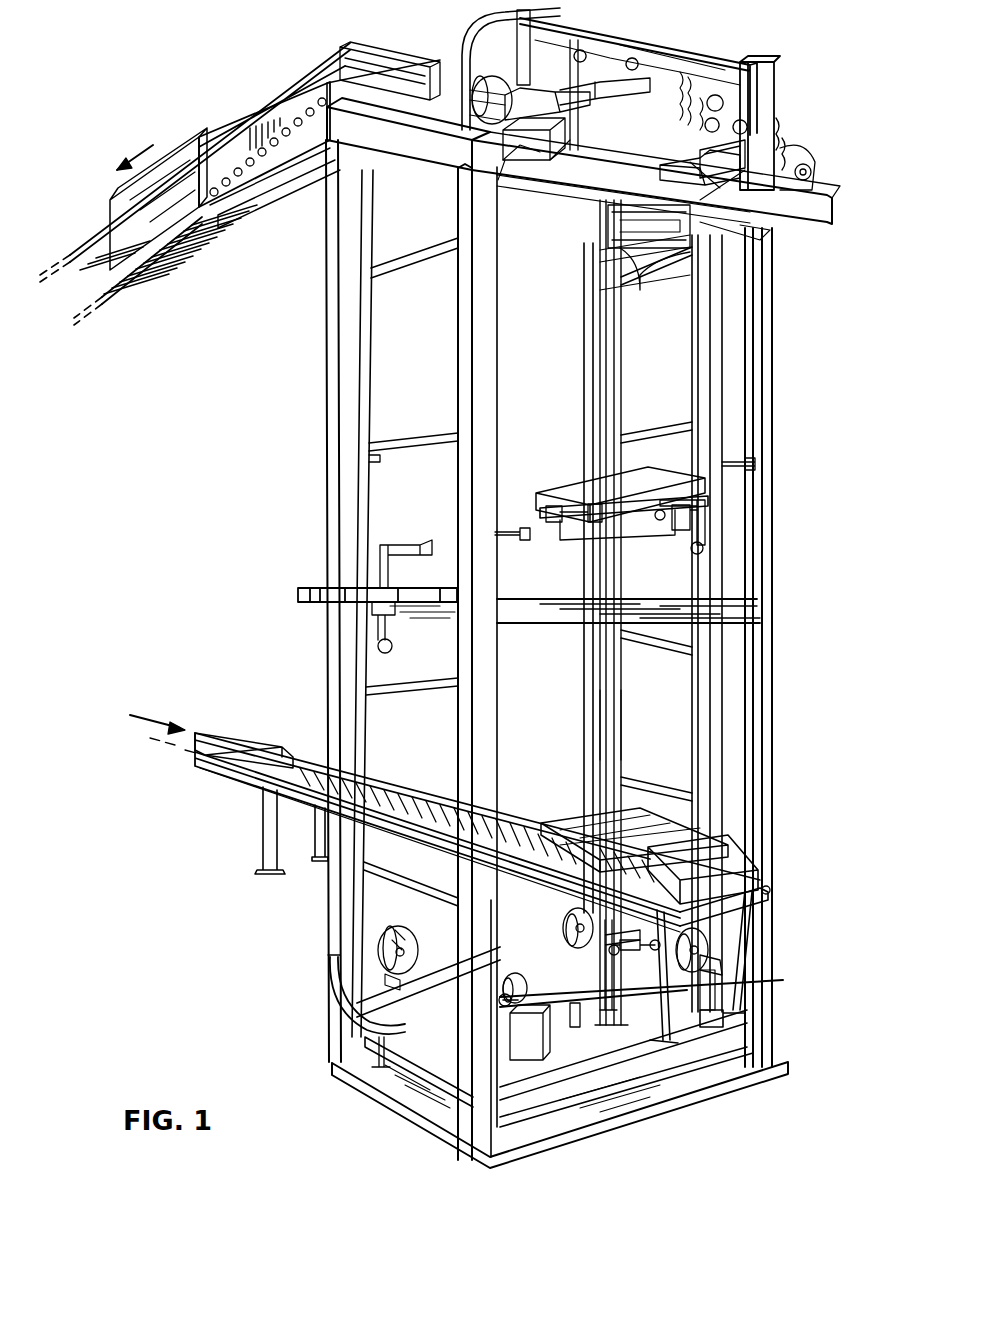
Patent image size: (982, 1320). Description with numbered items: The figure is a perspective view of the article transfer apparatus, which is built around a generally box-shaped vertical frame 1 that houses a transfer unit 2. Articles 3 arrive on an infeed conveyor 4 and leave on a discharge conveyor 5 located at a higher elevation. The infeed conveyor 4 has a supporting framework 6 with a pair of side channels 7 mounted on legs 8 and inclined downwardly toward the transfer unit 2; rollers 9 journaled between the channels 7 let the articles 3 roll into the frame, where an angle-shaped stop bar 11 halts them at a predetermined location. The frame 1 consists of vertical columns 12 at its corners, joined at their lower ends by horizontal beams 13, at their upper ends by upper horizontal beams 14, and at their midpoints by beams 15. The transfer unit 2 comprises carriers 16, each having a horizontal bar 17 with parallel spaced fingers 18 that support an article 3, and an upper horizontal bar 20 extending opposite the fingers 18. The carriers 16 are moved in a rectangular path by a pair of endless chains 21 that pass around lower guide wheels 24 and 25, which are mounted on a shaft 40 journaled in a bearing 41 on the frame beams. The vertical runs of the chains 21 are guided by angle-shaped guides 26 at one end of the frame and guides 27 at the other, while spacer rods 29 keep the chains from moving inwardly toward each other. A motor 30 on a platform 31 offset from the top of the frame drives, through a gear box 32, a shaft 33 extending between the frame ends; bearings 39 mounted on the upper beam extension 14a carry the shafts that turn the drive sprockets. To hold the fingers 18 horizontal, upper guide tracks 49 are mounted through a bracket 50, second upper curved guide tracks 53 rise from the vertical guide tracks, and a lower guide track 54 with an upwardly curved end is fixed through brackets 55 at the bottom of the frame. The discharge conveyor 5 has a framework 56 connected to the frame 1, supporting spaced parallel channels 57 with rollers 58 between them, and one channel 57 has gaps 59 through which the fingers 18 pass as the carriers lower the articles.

The vertical frame 1 is at (318, 425).
The transfer unit 2 is at (735, 688).
The articles 3 is at (182, 145).
The infeed conveyor 4 is at (410, 782).
The discharge conveyor 5 is at (265, 100).
The supporting framework 6 is at (262, 788).
The side channels 7 is at (420, 838).
The legs 8 is at (262, 828).
The rollers 9 is at (440, 790).
The stop bar 11 is at (730, 855).
The vertical columns 12 is at (326, 345).
The horizontal beams 13 is at (385, 1090).
The upper horizontal beams 14 is at (532, 178).
The upper beam extension 14a is at (700, 178).
The beams 15 is at (442, 625).
The carriers 16 is at (360, 602).
The horizontal bar 17 is at (675, 530).
The fingers 18 is at (552, 525).
The upper horizontal bar 20 is at (645, 922).
The chains 21 is at (700, 735).
The lower guide wheel 24 is at (412, 928).
The lower guide wheel 25 is at (575, 915).
The angle shaped guides 26 is at (700, 380).
The angle shaped guides 27 is at (372, 455).
The spacer rods 29 is at (405, 262).
The motor 30 is at (634, 285).
The platform 31 is at (822, 206).
The gear box 32 is at (672, 268).
The shaft 33 is at (808, 172).
The bearings 39 is at (715, 130).
The shaft 40 is at (405, 952).
The bearing 41 is at (720, 970).
The upper guide tracks 49 is at (672, 60).
The bracket 50 is at (775, 100).
The second upper curved guide tracks 53 is at (462, 45).
The guide track 54 is at (378, 1072).
The brackets 55 is at (372, 1050).
The framework 56 is at (130, 300).
The channels 57 is at (80, 236).
The rollers 58 is at (195, 265).
The gaps 59 is at (428, 62).